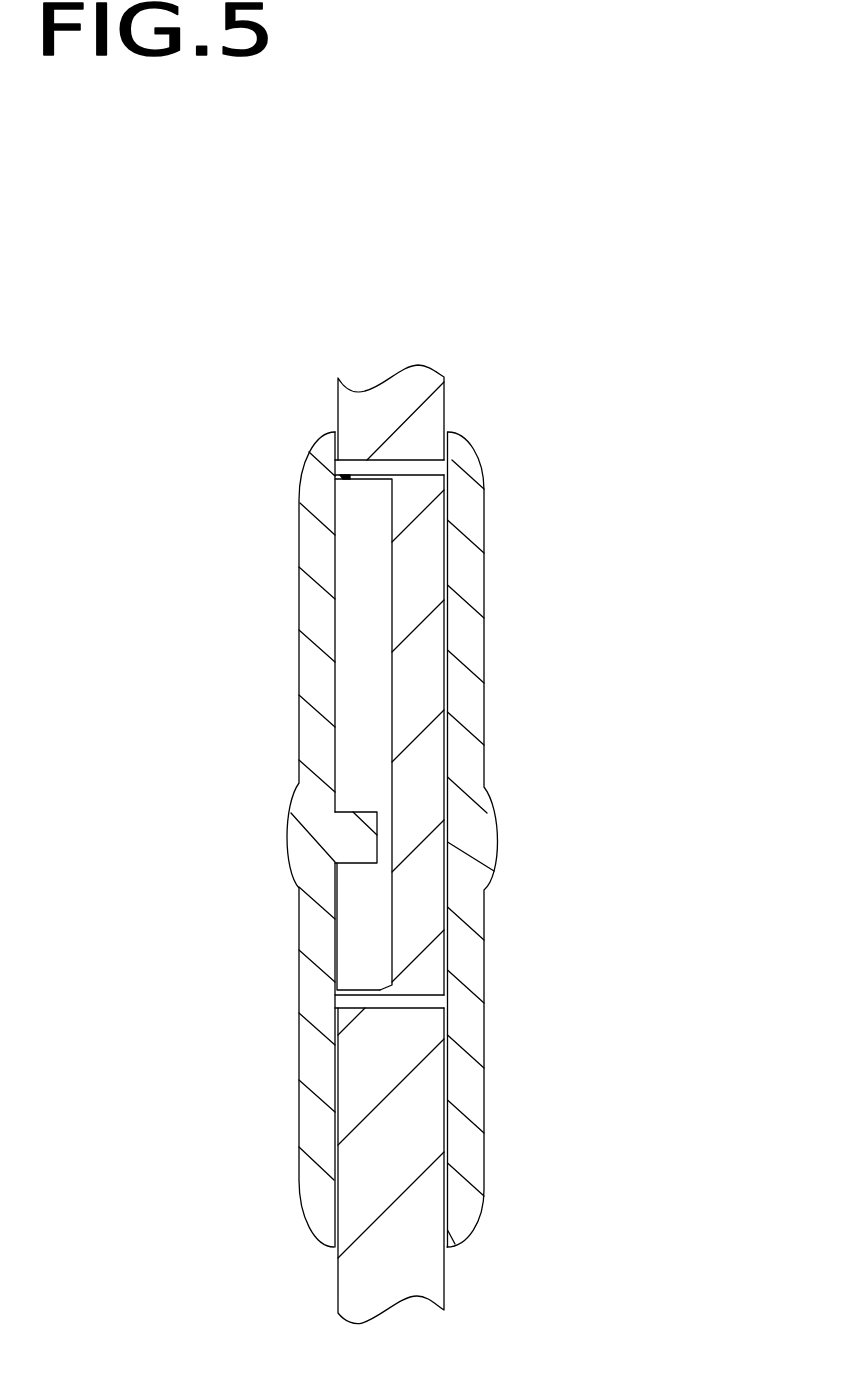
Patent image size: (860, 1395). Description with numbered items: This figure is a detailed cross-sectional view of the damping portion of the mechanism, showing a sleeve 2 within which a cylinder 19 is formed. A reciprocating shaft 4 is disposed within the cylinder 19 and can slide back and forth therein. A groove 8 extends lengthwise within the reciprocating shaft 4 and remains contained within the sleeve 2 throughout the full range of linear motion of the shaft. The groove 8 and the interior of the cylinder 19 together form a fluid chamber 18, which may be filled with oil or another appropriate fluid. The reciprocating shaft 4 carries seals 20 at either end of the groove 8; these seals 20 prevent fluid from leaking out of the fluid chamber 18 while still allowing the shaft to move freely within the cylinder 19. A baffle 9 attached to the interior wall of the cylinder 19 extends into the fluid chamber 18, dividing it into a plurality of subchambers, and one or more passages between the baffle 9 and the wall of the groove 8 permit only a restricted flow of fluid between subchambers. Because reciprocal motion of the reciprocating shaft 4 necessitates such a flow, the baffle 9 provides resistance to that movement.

The sleeve 2 is at (465, 878).
The reciprocating shaft 4 is at (415, 423).
The groove 8 is at (372, 674).
The baffle 9 is at (327, 837).
The fluid chamber 18 is at (370, 619).
The cylinder 19 is at (333, 940).
The seals 20 is at (363, 467).